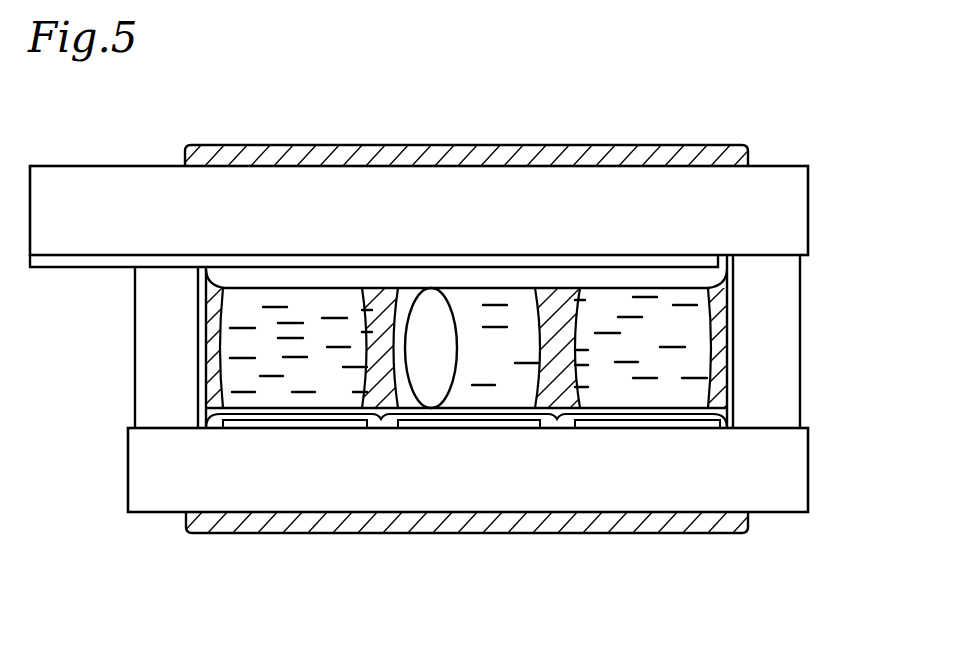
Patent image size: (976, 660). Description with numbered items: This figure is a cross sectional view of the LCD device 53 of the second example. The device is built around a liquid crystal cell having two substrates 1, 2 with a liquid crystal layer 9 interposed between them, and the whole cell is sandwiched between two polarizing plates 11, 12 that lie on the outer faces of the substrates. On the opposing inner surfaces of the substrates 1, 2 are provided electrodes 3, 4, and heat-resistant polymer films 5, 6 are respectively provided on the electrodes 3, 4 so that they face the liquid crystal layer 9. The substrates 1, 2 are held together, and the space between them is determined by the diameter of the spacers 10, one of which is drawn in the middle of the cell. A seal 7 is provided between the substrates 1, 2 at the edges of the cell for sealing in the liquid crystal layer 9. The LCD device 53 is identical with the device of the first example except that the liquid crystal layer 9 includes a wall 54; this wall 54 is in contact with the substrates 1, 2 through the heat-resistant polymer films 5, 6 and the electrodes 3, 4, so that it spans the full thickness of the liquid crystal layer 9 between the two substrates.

The substrate 1 is at (795, 208).
The substrate 2 is at (778, 495).
The electrode 3 is at (499, 262).
The electrode 4 is at (273, 425).
The heat-resistant polymer film 5 is at (243, 276).
The heat-resistant polymer film 6 is at (622, 410).
The seal 7 is at (148, 366).
The liquid crystal layer 9 is at (697, 330).
The spacer 10 is at (433, 302).
The polarizing plate 11 is at (318, 158).
The polarizing plate 12 is at (373, 525).
The LCD device 53 is at (657, 108).
The wall 54 is at (390, 293).